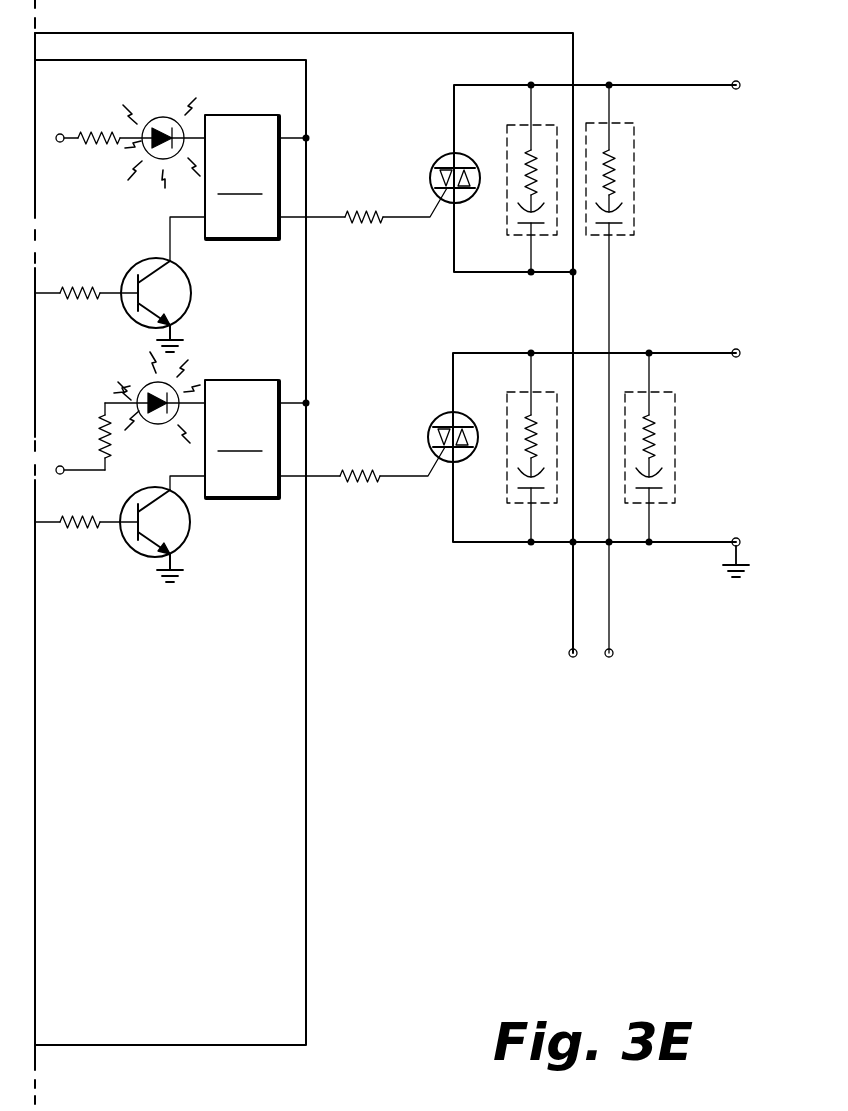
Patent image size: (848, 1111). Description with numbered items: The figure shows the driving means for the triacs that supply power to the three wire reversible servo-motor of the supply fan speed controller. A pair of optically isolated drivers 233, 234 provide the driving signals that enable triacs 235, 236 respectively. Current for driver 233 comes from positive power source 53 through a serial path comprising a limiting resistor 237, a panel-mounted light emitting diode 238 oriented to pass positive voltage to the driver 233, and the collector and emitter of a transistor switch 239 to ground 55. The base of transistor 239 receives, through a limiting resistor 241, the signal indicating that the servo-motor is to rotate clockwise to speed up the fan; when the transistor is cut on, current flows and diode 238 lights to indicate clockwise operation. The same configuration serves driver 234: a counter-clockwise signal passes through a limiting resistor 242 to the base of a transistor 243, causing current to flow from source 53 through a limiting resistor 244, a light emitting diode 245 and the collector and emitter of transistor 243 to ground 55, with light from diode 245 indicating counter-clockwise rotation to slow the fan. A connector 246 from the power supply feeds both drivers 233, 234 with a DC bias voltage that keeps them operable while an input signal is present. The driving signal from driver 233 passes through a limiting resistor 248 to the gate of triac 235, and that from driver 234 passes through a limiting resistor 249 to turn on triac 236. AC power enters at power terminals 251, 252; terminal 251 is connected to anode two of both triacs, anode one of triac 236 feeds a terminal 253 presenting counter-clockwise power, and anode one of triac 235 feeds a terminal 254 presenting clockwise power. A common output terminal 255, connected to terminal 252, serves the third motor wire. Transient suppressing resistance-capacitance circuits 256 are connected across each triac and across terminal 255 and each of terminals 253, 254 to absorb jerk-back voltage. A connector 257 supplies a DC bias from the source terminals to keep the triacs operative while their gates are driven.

The positive power source 53 is at (74, 115).
The ground 55 is at (183, 346).
The optically isolated driver 233 is at (257, 188).
The optically isolated driver 234 is at (255, 439).
The triac 235 is at (437, 164).
The triac 236 is at (434, 424).
The limiting resistor 237 is at (108, 152).
The light emitting diode 238 is at (192, 115).
The transistor switch 239 is at (151, 262).
The limiting resistor 241 is at (91, 288).
The limiting resistor 242 is at (68, 530).
The transistor 243 is at (190, 534).
The limiting resistor 244 is at (110, 440).
The light emitting diode 245 is at (144, 386).
The connector 246 is at (308, 320).
The limiting resistor 248 is at (376, 206).
The limiting resistor 249 is at (383, 466).
The power terminal 251 is at (571, 660).
The power terminal 252 is at (612, 658).
The terminal 253 is at (770, 330).
The terminal 254 is at (738, 90).
The common output terminal 255 is at (738, 538).
The transient suppressing resistance-capacitance circuit 256 is at (498, 133).
The connector 257 is at (295, 33).